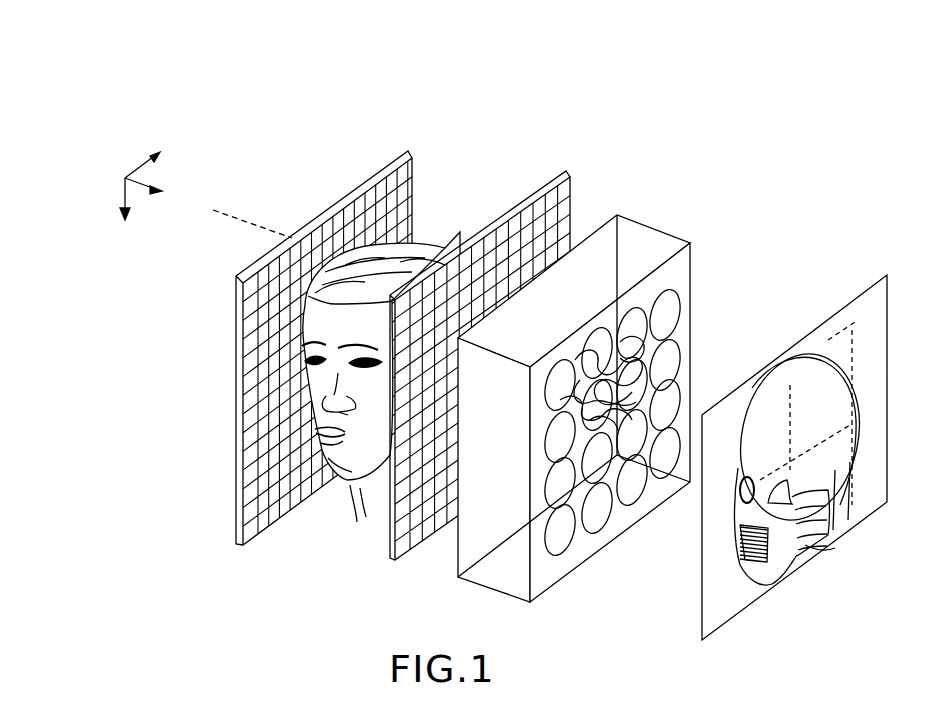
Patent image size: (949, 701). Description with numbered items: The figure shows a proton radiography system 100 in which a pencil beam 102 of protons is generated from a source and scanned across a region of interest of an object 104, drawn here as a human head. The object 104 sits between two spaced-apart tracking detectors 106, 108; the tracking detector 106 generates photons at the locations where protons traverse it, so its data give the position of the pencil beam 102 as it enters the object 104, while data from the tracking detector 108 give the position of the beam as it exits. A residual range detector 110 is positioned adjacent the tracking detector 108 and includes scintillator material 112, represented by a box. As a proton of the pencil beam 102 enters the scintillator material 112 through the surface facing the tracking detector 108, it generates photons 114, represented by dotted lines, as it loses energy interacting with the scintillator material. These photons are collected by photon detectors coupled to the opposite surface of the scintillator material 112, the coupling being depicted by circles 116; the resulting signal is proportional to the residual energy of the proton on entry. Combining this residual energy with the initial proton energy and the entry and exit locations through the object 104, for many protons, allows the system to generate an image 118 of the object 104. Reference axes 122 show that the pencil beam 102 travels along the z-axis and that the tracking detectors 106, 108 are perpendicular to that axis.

The proton radiography system 100 is at (92, 117).
The pencil beam 102 is at (253, 230).
The object 104 is at (428, 244).
The tracking detector 106 is at (409, 153).
The tracking detector 108 is at (568, 172).
The residual range detector 110 is at (658, 229).
The scintillator material 112 is at (506, 430).
The photons 114 is at (613, 438).
The circles 116 is at (563, 556).
The image 118 is at (887, 293).
The reference axes 122 is at (122, 188).